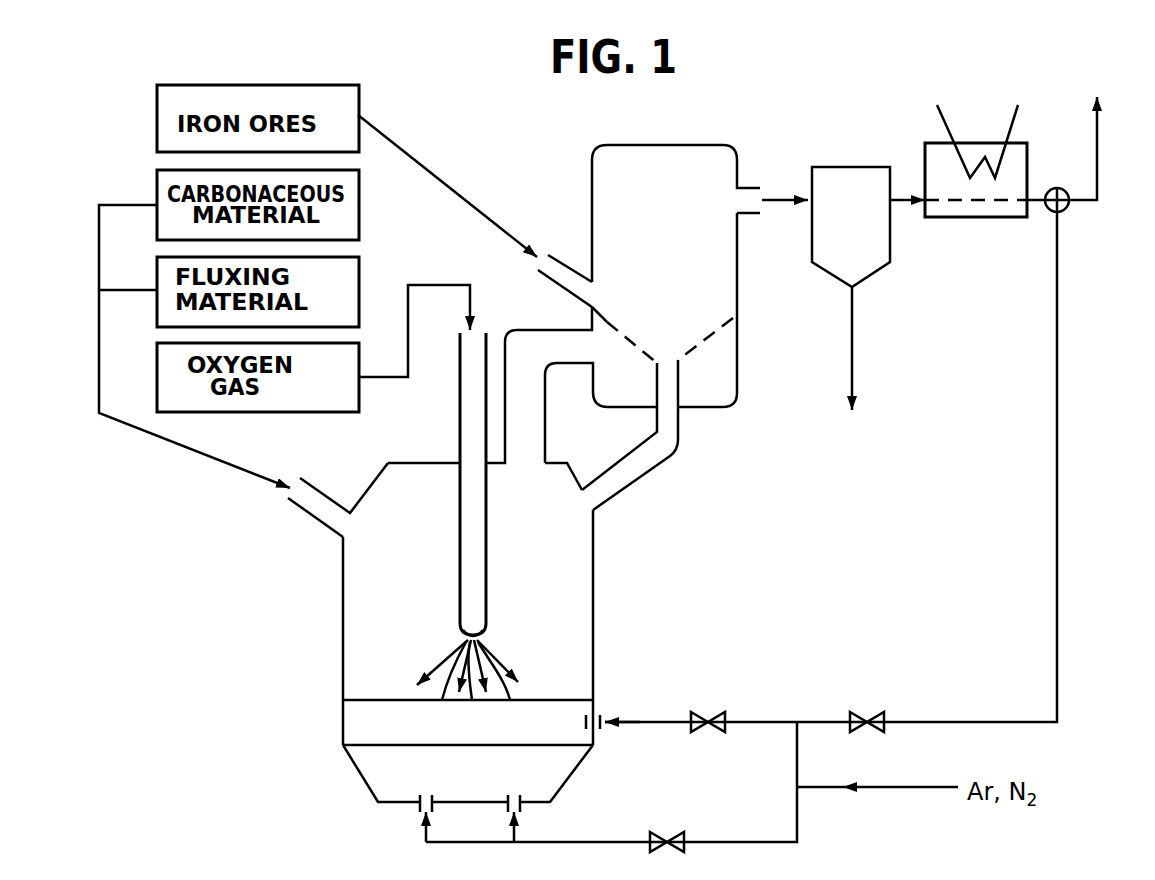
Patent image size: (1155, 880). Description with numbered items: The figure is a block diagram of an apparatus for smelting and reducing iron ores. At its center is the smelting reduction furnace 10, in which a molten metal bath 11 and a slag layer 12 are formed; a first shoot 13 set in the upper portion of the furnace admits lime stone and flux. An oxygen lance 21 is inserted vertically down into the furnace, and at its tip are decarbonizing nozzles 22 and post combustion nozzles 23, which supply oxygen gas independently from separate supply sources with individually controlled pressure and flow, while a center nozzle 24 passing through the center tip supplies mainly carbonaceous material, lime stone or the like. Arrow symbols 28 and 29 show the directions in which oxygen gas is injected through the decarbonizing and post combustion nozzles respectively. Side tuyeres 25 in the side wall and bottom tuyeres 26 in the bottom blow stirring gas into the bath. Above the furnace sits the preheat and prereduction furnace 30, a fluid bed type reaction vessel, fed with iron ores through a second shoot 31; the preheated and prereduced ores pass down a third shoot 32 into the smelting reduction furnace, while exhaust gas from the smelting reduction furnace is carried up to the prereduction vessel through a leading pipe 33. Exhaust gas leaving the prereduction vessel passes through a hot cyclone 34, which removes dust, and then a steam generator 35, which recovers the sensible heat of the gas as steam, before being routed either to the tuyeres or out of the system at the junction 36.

The smelting reduction furnace 10 is at (340, 610).
The molten metal bath 11 is at (378, 775).
The slag layer 12 is at (360, 724).
The first shoot 13 is at (318, 517).
The oxygen lance 21 is at (460, 407).
The decarbonizing nozzles 22 is at (442, 701).
The post combustion nozzles 23 is at (487, 636).
The center nozzle 24 is at (511, 701).
The side tuyeres 25 is at (600, 716).
The bottom tuyeres 26 is at (418, 812).
The arrow symbols 28 is at (472, 700).
The arrow symbols 29 is at (433, 666).
The preheat and prereduction furnace 30 is at (742, 375).
The second shoot 31 is at (568, 264).
The third shoot 32 is at (657, 468).
The leading pipe 33 is at (547, 415).
The hot cyclone 34 is at (874, 263).
The steam generator 35 is at (992, 210).
The gas mixing point 36 is at (1068, 208).